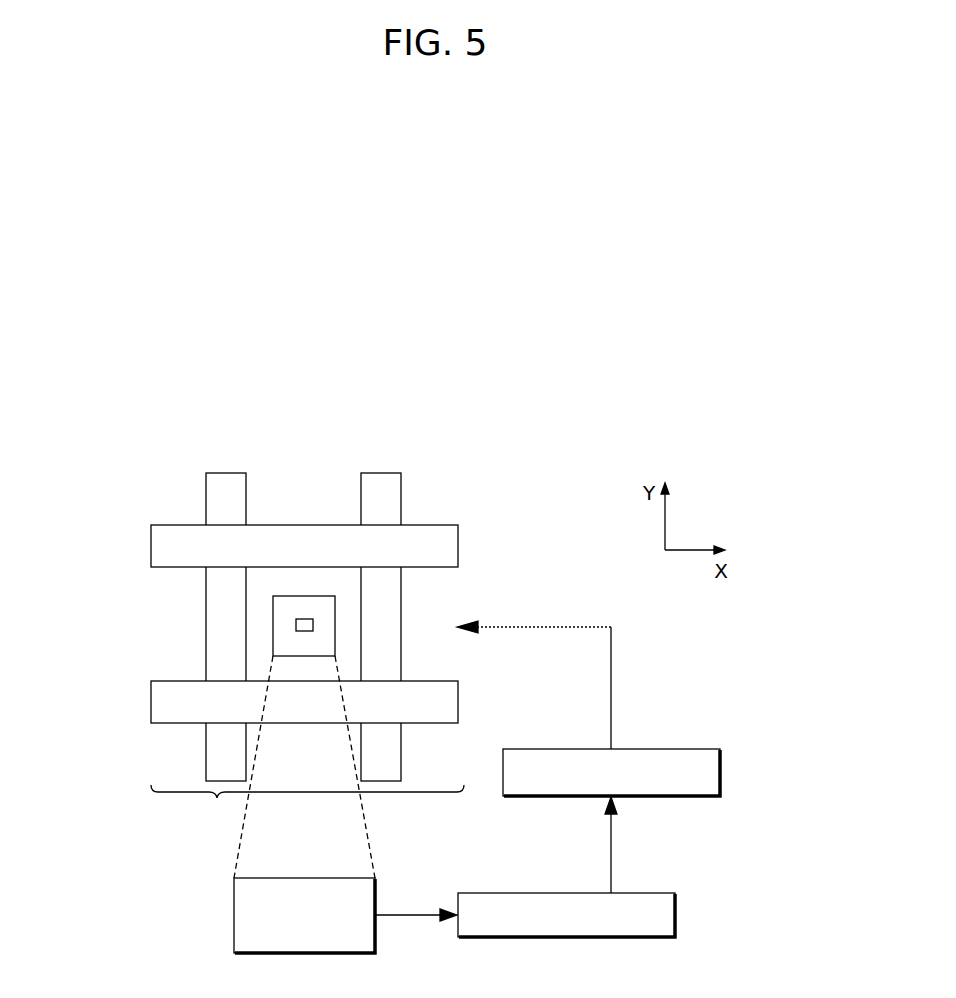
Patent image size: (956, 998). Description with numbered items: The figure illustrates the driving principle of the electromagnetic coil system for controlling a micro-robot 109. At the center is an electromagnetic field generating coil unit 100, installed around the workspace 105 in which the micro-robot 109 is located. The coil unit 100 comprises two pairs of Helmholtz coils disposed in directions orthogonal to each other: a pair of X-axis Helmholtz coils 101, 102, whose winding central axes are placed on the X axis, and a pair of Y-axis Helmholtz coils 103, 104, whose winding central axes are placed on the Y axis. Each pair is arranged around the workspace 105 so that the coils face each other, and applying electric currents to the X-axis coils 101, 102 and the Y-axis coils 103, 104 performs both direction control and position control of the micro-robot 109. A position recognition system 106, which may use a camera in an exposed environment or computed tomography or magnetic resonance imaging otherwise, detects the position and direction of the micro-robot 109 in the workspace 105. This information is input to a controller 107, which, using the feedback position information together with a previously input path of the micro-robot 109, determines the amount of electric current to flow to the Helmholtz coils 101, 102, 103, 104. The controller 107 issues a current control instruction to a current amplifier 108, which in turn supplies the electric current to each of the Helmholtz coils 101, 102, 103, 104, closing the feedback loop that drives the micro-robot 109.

The electromagnetic field generating coil unit 100 is at (307, 803).
The X-axis Helmholtz coil 101 is at (383, 473).
The X-axis Helmholtz coil 102 is at (223, 473).
The Y-axis Helmholtz coil 103 is at (151, 543).
The Y-axis Helmholtz coil 104 is at (151, 702).
The workspace 105 is at (335, 610).
The position recognition system 106 is at (234, 933).
The controller 107 is at (677, 925).
The current amplifier 108 is at (722, 786).
The micro-robot 109 is at (307, 632).